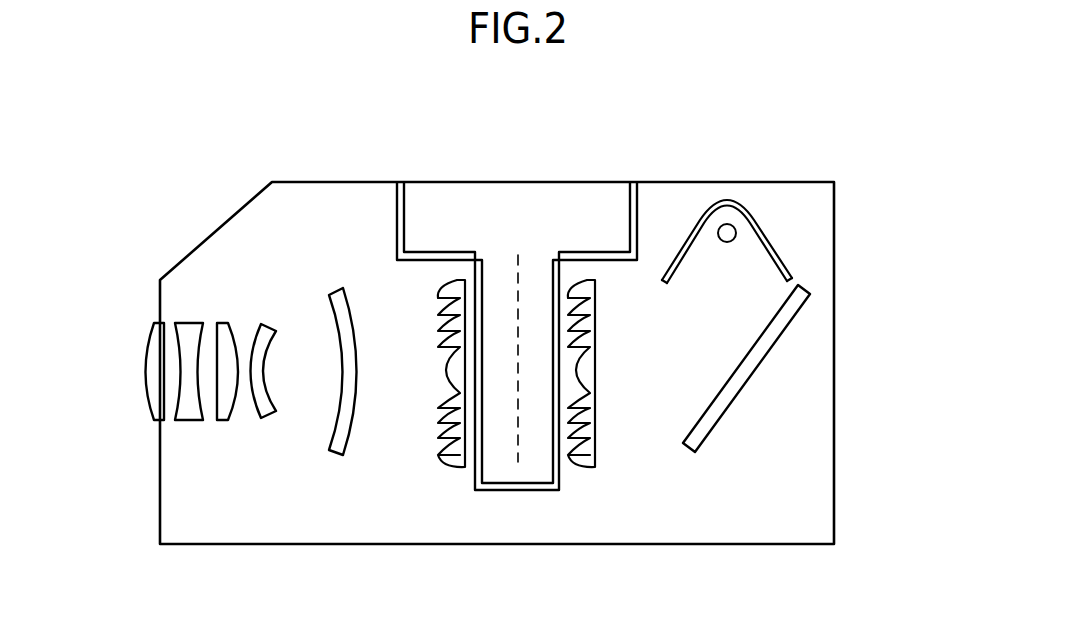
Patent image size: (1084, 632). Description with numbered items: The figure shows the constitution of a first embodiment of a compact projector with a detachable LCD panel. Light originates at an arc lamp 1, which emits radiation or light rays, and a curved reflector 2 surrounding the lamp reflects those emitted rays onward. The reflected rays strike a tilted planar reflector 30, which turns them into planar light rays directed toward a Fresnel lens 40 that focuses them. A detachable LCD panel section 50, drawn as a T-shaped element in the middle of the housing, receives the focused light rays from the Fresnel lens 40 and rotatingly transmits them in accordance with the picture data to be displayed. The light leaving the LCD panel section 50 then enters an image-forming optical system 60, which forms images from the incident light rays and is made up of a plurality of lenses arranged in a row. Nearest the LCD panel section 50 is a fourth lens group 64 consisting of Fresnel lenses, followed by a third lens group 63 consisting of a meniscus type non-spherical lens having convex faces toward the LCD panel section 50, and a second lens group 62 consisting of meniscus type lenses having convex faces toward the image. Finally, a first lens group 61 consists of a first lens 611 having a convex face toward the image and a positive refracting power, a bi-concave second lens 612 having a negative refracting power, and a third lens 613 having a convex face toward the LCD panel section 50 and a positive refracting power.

The arc lamp 1 is at (727, 224).
The reflector 2 is at (775, 245).
The planar reflector 30 is at (767, 342).
The Fresnel lens 40 is at (588, 455).
The detachable LCD panel section 50 is at (517, 192).
The image-forming optical system 60 is at (274, 317).
The first lens group 61 is at (175, 268).
The first lens 611 is at (153, 340).
The second lens 612 is at (191, 324).
The third lens 613 is at (240, 291).
The second lens group 62 is at (263, 327).
The third lens group 63 is at (343, 302).
The fourth lens group 64 is at (460, 280).